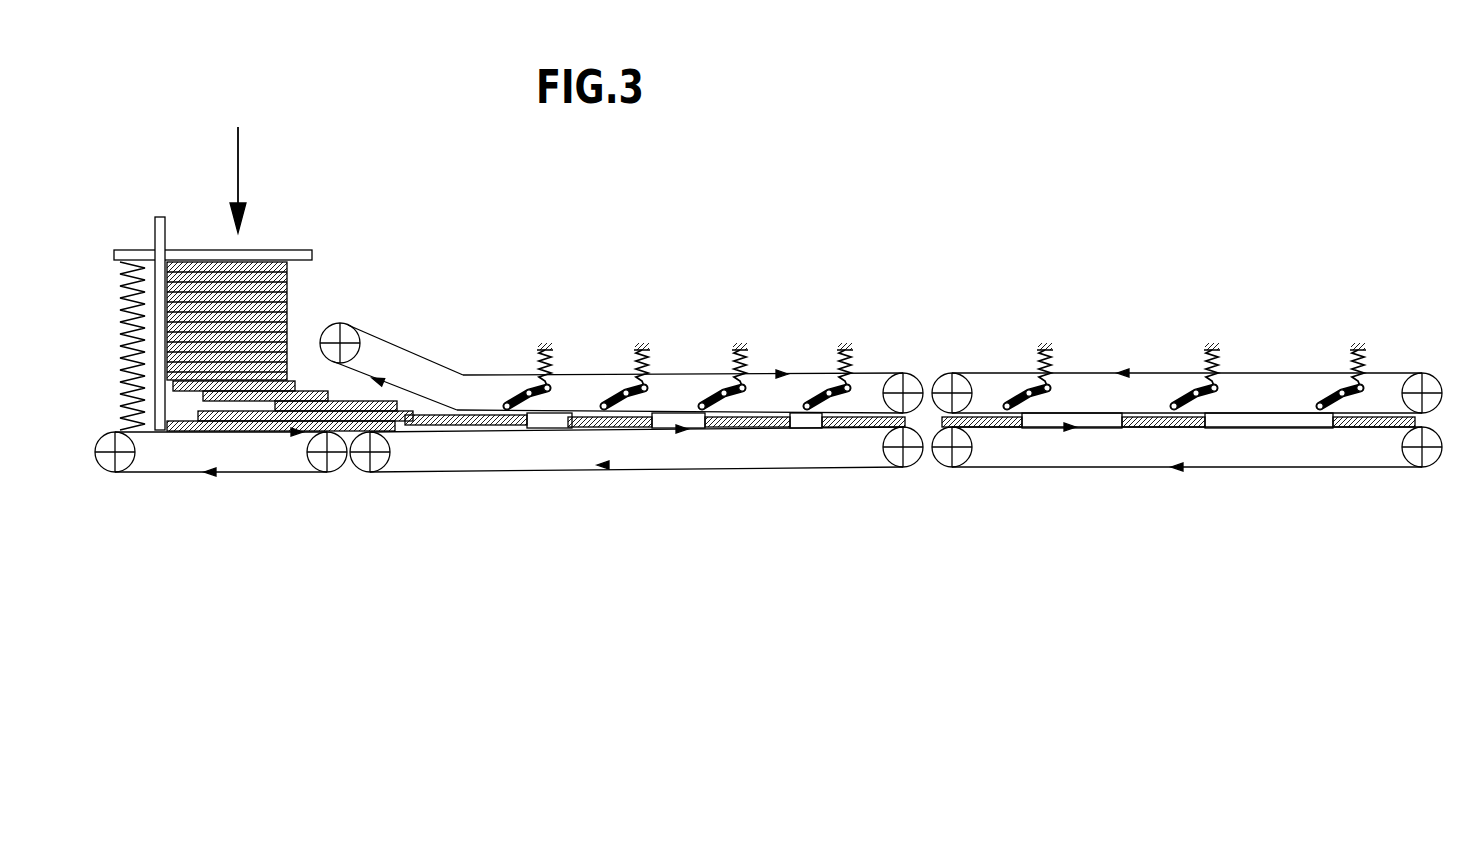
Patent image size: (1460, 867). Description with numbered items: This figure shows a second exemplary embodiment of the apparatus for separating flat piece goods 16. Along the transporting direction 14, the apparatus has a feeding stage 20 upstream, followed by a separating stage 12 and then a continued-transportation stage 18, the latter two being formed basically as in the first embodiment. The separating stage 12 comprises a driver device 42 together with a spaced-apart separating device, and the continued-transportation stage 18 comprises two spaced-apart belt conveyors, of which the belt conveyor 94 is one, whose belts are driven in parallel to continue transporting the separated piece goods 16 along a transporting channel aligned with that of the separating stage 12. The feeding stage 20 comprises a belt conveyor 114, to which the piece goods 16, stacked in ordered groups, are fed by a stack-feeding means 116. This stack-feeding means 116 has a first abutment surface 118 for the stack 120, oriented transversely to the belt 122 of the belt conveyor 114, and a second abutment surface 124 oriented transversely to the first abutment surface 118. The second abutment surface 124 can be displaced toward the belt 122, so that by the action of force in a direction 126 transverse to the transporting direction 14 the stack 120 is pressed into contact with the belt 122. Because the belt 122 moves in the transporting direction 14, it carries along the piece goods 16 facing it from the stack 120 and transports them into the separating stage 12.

The separating stage 12 is at (787, 300).
The transporting direction 14 is at (679, 432).
The flat piece goods 16 is at (297, 297).
The continued-transportation stage 18 is at (1232, 283).
The feeding stage 20 is at (254, 515).
The driver device 42 is at (582, 509).
The belt conveyor 94 is at (1211, 513).
The belt conveyor 114 is at (250, 508).
The stack-feeding means 116 is at (222, 248).
The first abutment surface 118 is at (153, 275).
The stack 120 is at (263, 255).
The belt 122 is at (175, 472).
The second abutment surface 124 is at (222, 253).
The direction of force 126 is at (235, 155).